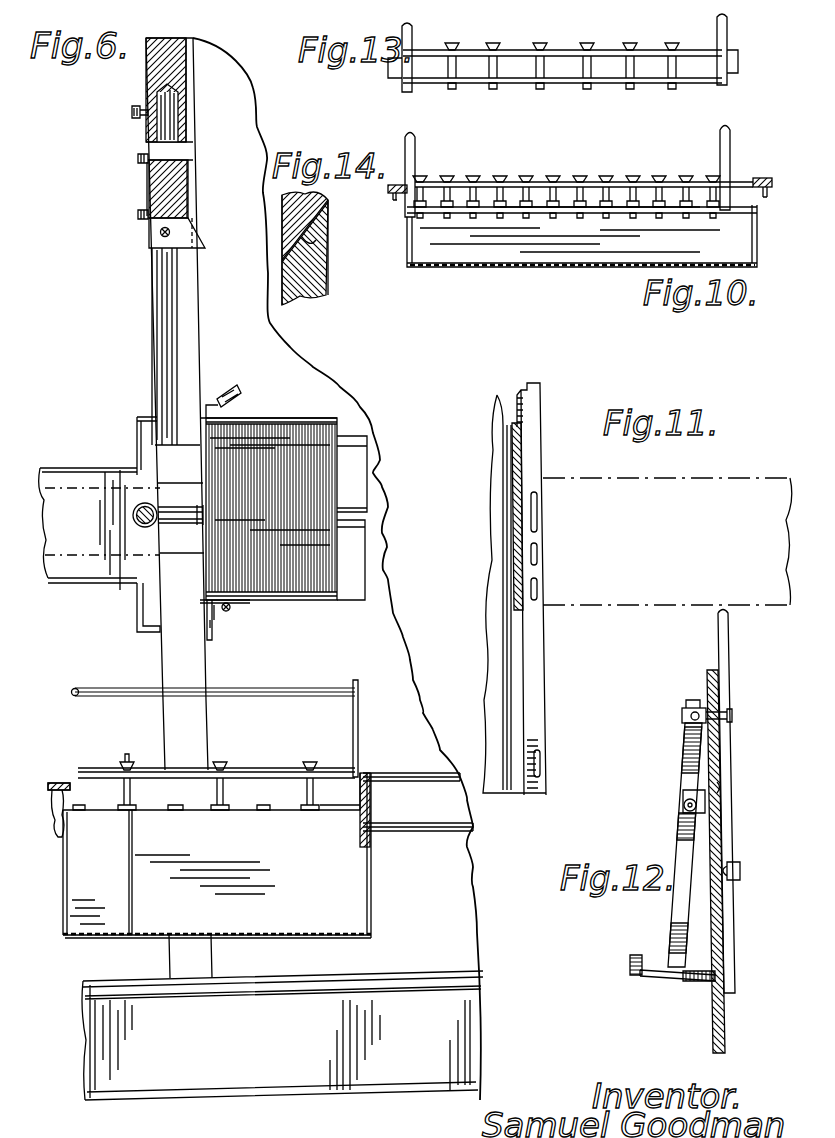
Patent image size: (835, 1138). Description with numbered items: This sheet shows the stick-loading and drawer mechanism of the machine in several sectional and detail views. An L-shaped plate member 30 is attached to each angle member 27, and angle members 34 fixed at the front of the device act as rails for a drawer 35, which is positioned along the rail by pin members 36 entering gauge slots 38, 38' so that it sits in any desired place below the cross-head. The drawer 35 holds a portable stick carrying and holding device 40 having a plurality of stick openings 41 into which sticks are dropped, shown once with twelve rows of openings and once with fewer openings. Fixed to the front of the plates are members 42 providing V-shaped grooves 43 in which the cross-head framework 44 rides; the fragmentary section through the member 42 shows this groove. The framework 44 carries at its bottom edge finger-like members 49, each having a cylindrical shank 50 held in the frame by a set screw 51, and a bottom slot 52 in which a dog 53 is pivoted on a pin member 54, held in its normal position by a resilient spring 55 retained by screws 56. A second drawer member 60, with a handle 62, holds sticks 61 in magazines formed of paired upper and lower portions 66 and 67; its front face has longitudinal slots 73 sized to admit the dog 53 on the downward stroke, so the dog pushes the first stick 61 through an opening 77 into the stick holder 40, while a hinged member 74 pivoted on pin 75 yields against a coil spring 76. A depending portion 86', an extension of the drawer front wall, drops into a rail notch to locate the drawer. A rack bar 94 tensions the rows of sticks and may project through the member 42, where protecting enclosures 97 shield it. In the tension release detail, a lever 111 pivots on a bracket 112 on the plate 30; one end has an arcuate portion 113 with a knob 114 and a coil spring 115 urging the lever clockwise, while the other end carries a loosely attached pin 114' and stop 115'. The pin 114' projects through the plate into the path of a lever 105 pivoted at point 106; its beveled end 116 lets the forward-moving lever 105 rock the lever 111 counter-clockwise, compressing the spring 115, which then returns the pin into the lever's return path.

In FIG. 6, the angle member 27 is at (452, 822).
In FIG. 12, the plate member 30 is at (717, 838).
In FIG. 6, the angle member 34 is at (413, 780).
In FIG. 11, the angle member 34 is at (540, 700).
In FIG. 6, the drawer 35 is at (372, 900).
In FIG. 10, the drawer 35 is at (452, 267).
In FIG. 10, the pin member 36 is at (395, 195).
In FIG. 11, the gauge slot 38 is at (566, 546).
In FIG. 11, the gauge slot 38' is at (569, 756).
In FIG. 10, the stick carrying and holding device 40 is at (611, 226).
In FIG. 6, the stick opening 41 is at (220, 762).
In FIG. 13, the stick opening 41 is at (540, 43).
In FIG. 10, the stick opening 41 is at (545, 176).
In FIG. 6, the member 42 is at (187, 343).
In FIG. 14, the member 42 is at (312, 242).
In FIG. 6, the groove 43 is at (175, 310).
In FIG. 14, the groove 43 is at (300, 240).
In FIG. 6, the cross-head framework 44 is at (150, 72).
In FIG. 14, the cross-head framework 44 is at (312, 272).
In FIG. 6, the finger-like member 49 is at (149, 182).
In FIG. 6, the cylindrical shank 50 is at (170, 118).
In FIG. 6, the set screw 51 is at (131, 113).
In FIG. 6, the slot 52 is at (187, 220).
In FIG. 6, the dog 53 is at (190, 240).
In FIG. 6, the pin member 54 is at (160, 234).
In FIG. 6, the resilient spring 55 is at (147, 199).
In FIG. 6, the screw 56 is at (137, 158).
In FIG. 6, the drawer member 60 is at (351, 610).
In FIG. 6, the stick 61 is at (309, 418).
In FIG. 6, the handle 62 is at (137, 470).
In FIG. 6, the upper portion 66 is at (358, 480).
In FIG. 6, the lower portion 67 is at (358, 551).
In FIG. 6, the longitudinal slot 73 is at (206, 410).
In FIG. 6, the hinged member 74 is at (220, 618).
In FIG. 6, the pin 75 is at (232, 608).
In FIG. 6, the coil spring 76 is at (214, 614).
In FIG. 6, the opening 77 is at (212, 606).
In FIG. 6, the depending portion 86' is at (175, 647).
In FIG. 6, the rack bar 94 is at (137, 624).
In FIG. 6, the protecting enclosure 97 is at (103, 560).
In FIG. 12, the lever 105 is at (726, 790).
In FIG. 12, the pivot point 106 is at (740, 868).
In FIG. 12, the lever 111 is at (680, 847).
In FIG. 12, the bracket 112 is at (683, 797).
In FIG. 12, the arcuate portion 113 is at (657, 975).
In FIG. 12, the knob 114 is at (601, 958).
In FIG. 12, the pin 114' is at (681, 683).
In FIG. 12, the coil spring 115 is at (671, 1007).
In FIG. 12, the stop 115' is at (669, 705).
In FIG. 12, the beveled portion 116 is at (730, 712).